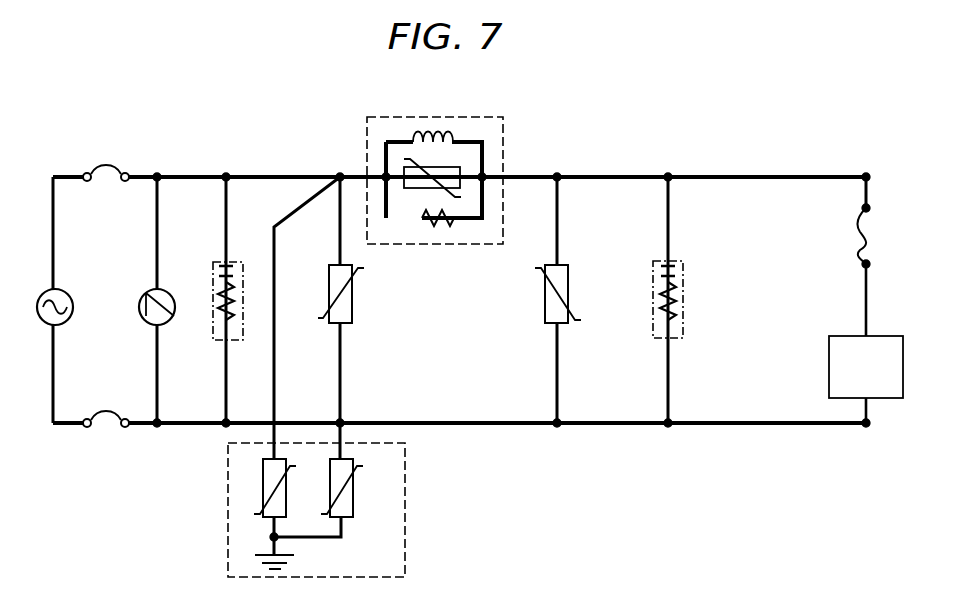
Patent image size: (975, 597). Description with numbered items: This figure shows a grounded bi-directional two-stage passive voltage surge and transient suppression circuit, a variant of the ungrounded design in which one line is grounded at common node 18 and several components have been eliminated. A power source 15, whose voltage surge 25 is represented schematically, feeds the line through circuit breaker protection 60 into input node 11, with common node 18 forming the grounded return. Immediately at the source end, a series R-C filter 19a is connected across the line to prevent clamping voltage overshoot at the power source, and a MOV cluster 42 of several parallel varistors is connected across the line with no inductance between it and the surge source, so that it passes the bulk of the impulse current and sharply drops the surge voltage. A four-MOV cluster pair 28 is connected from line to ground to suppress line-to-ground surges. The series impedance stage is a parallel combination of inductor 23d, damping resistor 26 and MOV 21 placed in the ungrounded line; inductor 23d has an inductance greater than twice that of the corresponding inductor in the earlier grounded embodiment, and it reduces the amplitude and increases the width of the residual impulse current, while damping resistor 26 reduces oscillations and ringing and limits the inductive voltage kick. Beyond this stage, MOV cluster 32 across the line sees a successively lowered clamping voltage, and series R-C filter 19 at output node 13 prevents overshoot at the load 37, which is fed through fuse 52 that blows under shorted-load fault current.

The input node 11 is at (157, 177).
The output node 13 is at (866, 177).
The power source 15 is at (59, 289).
The common node 18 is at (157, 423).
The series R-C filter 19 is at (686, 276).
The series R-C filter 19a is at (231, 262).
The MOV 21 is at (410, 181).
The inductor 23d is at (452, 134).
The voltage surge 25 is at (150, 324).
The damping resistor 26 is at (450, 224).
The four-MOV cluster pair 28 is at (405, 510).
The MOV cluster 32 is at (544, 292).
The load 37 is at (887, 336).
The MOV cluster 42 is at (354, 290).
The fuse 52 is at (862, 251).
The circuit breaker protection 60 is at (108, 164).